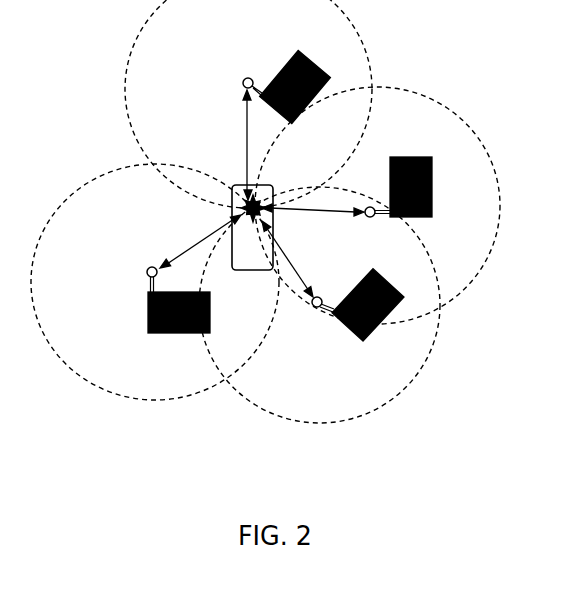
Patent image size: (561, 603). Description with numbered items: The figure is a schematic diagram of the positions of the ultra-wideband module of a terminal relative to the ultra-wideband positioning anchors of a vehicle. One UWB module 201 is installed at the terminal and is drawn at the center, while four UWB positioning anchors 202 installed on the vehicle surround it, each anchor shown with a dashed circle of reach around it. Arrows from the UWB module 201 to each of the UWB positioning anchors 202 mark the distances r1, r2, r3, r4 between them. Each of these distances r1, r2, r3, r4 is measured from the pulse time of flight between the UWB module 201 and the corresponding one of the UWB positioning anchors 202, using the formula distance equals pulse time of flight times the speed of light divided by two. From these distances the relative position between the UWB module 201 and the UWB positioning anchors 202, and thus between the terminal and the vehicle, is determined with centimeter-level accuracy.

The UWB module 201 is at (205, 194).
The UWB positioning anchors 202 is at (268, 203).
The distance r1 is at (236, 145).
The distance r2 is at (200, 241).
The distance r3 is at (289, 259).
The distance r4 is at (313, 221).